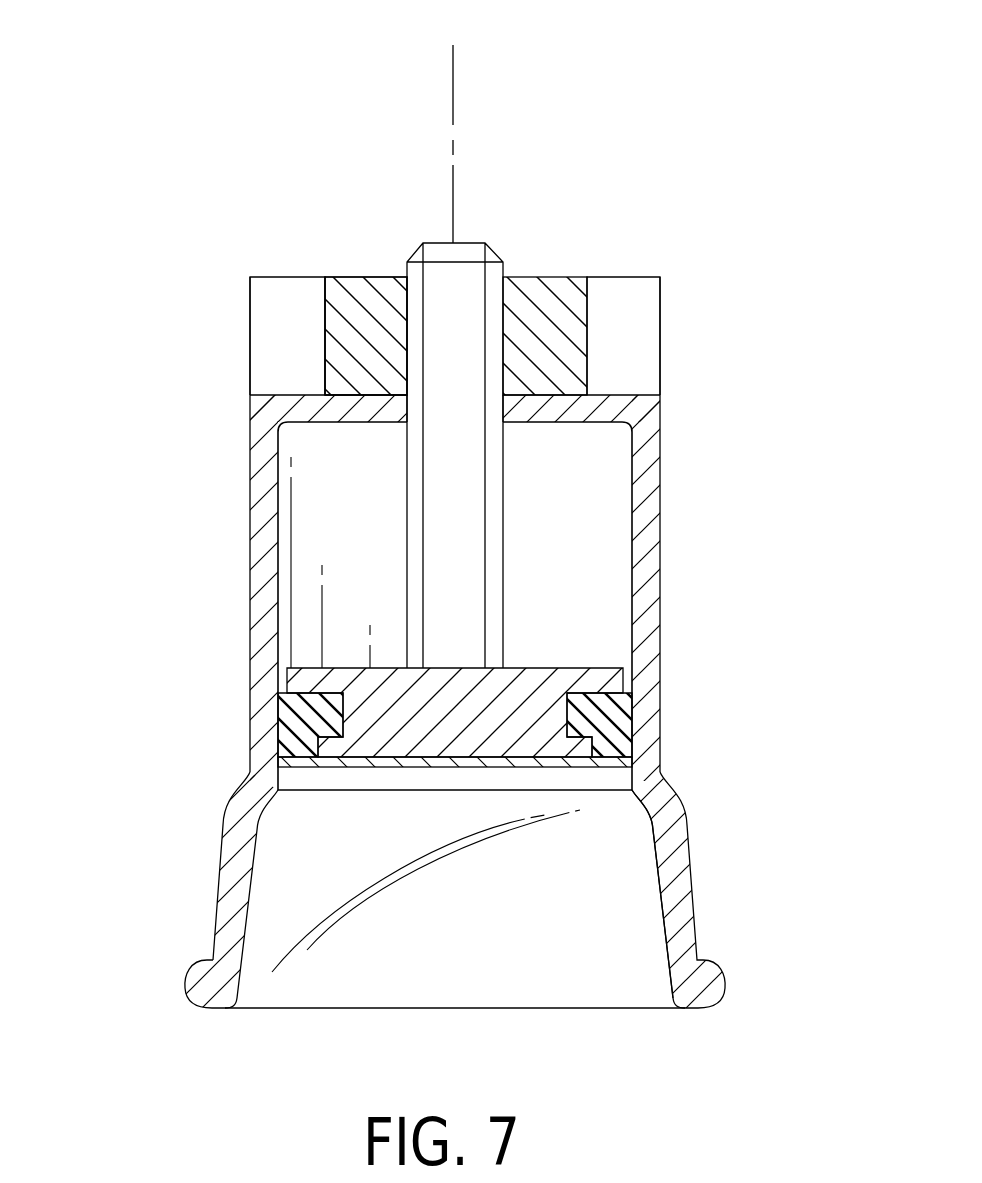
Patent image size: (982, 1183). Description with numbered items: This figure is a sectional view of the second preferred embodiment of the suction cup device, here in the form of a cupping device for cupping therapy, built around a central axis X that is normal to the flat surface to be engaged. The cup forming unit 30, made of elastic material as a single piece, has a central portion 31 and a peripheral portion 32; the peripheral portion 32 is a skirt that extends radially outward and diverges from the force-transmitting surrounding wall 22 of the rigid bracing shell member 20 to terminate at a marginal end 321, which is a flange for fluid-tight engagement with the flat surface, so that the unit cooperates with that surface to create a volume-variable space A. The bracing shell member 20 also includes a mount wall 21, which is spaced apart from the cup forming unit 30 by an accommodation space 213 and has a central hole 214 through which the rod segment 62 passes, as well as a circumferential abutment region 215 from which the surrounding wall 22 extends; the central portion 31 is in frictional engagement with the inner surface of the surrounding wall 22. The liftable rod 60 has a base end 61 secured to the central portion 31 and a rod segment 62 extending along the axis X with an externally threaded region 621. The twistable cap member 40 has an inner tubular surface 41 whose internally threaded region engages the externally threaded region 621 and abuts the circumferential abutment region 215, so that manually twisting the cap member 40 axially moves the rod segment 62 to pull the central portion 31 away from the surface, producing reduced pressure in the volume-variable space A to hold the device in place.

The bracing shell member 20 is at (499, 533).
The mount wall 21 is at (313, 407).
The force-transmitting surrounding wall 22 is at (262, 553).
The accommodation space 213 is at (610, 472).
The central hole 214 is at (503, 402).
The circumferential abutment region 215 is at (620, 396).
The cup forming unit 30 is at (453, 890).
The central portion 31 is at (430, 765).
The peripheral portion 32 is at (240, 875).
The marginal end 321 is at (193, 980).
The twistable cap member 40 is at (416, 268).
The inner tubular surface 41 is at (507, 347).
The liftable rod 60 is at (335, 393).
The base end 61 is at (538, 718).
The rod segment 62 is at (412, 512).
The externally threaded region 621 is at (405, 326).
The volume-variable space A is at (613, 873).
The central axis X is at (457, 121).